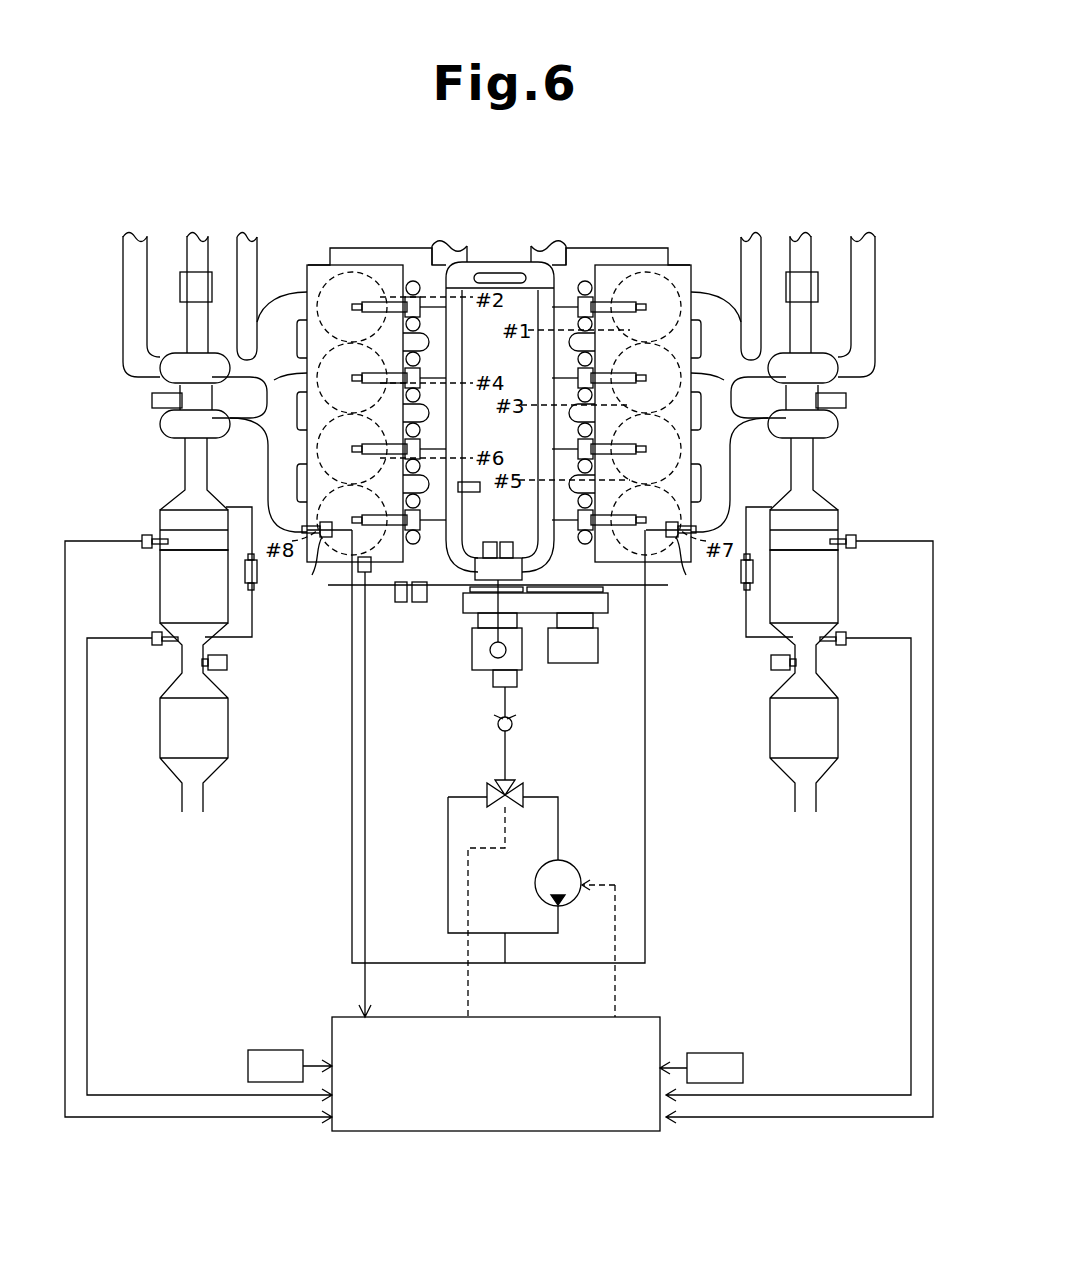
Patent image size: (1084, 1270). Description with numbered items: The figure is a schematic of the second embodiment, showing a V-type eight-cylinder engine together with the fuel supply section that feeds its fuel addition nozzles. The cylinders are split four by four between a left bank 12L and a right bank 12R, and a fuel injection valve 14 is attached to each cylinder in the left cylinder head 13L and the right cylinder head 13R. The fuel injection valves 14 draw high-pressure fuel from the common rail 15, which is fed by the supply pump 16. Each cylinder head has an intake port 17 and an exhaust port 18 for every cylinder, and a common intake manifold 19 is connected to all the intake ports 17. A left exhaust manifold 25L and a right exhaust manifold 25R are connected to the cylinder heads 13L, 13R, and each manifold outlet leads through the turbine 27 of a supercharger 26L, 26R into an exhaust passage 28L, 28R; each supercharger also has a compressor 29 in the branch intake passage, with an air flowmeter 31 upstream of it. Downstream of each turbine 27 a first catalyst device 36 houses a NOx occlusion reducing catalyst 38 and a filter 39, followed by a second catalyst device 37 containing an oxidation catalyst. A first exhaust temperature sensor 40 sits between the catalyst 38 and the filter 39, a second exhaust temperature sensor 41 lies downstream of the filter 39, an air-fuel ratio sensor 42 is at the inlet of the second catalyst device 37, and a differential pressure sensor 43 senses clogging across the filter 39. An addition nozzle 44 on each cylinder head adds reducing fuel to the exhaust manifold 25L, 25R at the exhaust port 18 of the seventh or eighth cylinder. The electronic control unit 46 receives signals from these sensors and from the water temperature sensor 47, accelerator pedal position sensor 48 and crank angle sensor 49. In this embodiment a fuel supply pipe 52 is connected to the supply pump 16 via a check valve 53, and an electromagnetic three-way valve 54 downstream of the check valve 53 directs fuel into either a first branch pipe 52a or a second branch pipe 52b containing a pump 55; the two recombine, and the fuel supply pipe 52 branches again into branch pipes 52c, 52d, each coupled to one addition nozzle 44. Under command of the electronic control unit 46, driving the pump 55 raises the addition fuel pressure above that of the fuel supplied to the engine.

The left bank 12L is at (330, 252).
The right bank 12R is at (678, 256).
The left cylinder head 13L is at (310, 283).
The right cylinder head 13R is at (690, 283).
The fuel injection valve 14 is at (360, 310).
The common rail 15 is at (542, 357).
The supply pump 16 is at (480, 670).
The intake port 17 is at (404, 340).
The exhaust port 18 is at (243, 333).
The intake manifold 19 is at (546, 552).
The left exhaust manifold 25L is at (268, 452).
The right exhaust manifold 25R is at (730, 452).
The supercharger 26L is at (150, 428).
The supercharger 26R is at (850, 432).
The turbine 27 is at (227, 413).
The exhaust passage 28L is at (186, 476).
The exhaust passage 28R is at (812, 480).
The compressor 29 is at (175, 360).
The air flowmeter 31 is at (180, 285).
The first catalyst device 36 is at (256, 649).
The second catalyst device 37 is at (165, 740).
The catalyst 38 is at (165, 520).
The filter 39 is at (165, 610).
The first exhaust temperature sensor 40 is at (147, 550).
The second exhaust temperature sensor 41 is at (157, 648).
The air-fuel ratio sensor 42 is at (228, 664).
The differential pressure sensor 43 is at (257, 586).
The addition nozzle 44 is at (501, 560).
The electronic control unit 46 is at (647, 1013).
The water temperature sensor 47 is at (372, 574).
The accelerator pedal position sensor 48 is at (276, 1050).
The crank angle sensor 49 is at (712, 1053).
The fuel supply pipe 52 is at (506, 702).
The first branch pipe 52a is at (447, 862).
The second branch pipe 52b is at (560, 832).
The branch pipe 52c is at (350, 915).
The branch pipe 52d is at (647, 915).
The check valve 53 is at (492, 723).
The electromagnetic three-way valve 54 is at (487, 792).
The pump 55 is at (546, 860).